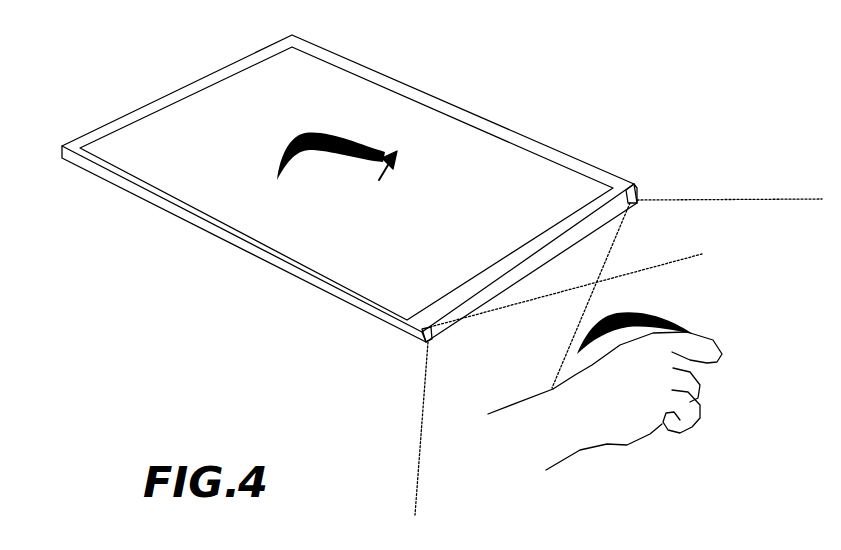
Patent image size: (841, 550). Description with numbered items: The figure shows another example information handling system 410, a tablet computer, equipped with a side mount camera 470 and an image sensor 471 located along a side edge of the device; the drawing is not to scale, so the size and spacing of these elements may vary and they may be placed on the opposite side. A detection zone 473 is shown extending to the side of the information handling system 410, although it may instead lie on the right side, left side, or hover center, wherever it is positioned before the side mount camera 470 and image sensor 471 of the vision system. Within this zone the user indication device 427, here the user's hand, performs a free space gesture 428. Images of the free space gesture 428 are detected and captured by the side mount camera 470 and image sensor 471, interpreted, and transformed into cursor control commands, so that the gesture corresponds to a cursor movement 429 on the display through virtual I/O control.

The information handling system 410 is at (96, 99).
The cursor movement 429 is at (394, 102).
The side mount camera 470 is at (681, 169).
The image sensor 471 is at (377, 348).
The detection zone 473 is at (722, 207).
The free space gesture 428 is at (683, 323).
The user indication device 427 is at (617, 401).